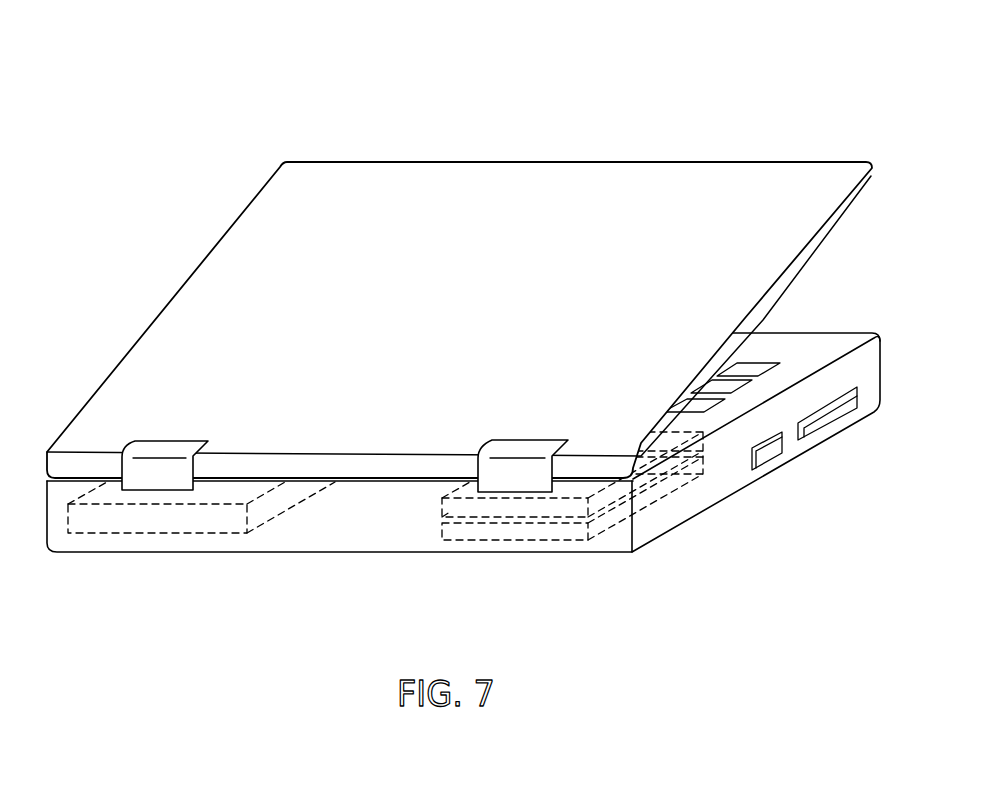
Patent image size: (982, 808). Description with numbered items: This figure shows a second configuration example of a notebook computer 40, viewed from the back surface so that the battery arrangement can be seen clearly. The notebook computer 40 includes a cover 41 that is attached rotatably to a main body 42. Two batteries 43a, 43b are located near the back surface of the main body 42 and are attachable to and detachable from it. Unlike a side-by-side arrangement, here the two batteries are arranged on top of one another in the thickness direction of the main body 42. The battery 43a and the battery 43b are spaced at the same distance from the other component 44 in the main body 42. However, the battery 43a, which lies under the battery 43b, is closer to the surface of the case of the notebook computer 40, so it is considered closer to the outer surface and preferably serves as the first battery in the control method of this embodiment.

The notebook computer 40 is at (463, 315).
The cover 41 is at (646, 178).
The main body 42 is at (826, 348).
The battery 43a is at (537, 533).
The battery 43b is at (475, 510).
The other component 44 is at (172, 522).